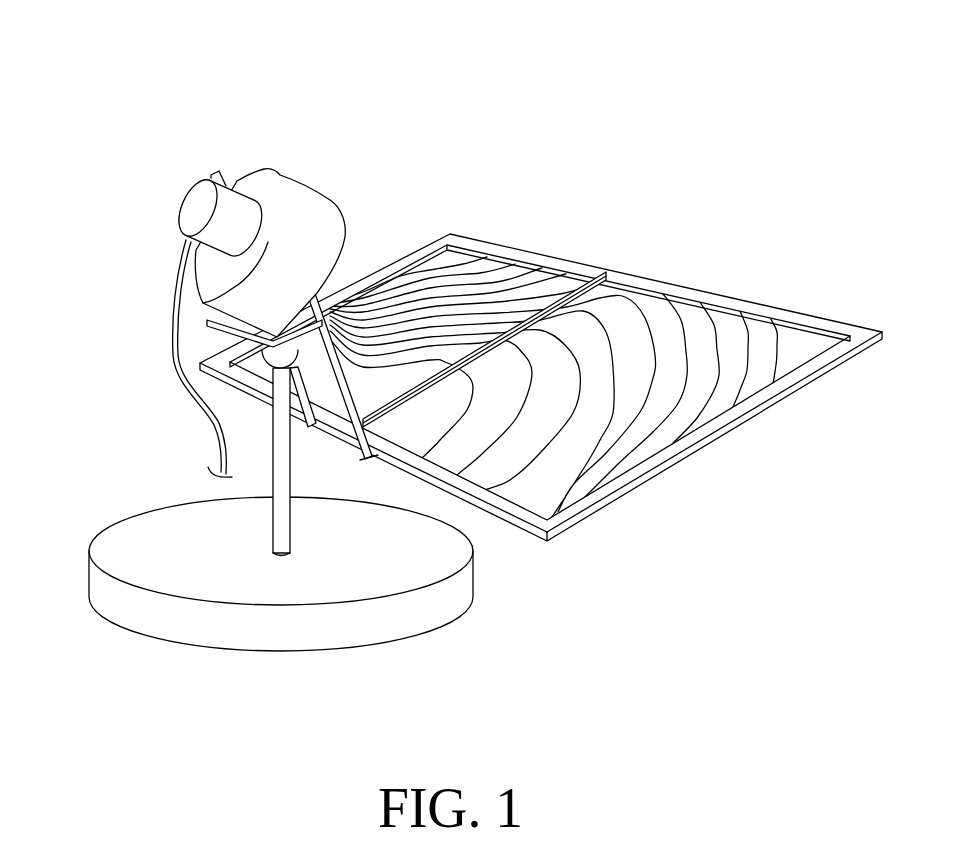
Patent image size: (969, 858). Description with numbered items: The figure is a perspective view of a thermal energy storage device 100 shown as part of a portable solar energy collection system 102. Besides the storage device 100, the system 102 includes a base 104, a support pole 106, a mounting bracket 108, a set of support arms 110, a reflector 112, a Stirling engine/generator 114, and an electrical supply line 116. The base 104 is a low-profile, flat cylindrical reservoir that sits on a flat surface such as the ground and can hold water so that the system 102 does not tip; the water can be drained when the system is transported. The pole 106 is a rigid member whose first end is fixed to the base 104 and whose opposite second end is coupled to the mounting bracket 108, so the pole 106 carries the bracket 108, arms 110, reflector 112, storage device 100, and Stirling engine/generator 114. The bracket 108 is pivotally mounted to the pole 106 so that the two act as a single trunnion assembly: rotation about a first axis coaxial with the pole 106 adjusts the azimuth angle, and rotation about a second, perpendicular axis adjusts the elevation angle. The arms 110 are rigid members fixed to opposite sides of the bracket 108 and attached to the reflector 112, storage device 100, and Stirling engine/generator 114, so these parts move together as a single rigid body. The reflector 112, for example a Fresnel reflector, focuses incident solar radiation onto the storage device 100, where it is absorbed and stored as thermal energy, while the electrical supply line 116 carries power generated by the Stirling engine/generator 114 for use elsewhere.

The thermal energy storage device 100 is at (306, 213).
The portable solar energy collection system 102 is at (474, 341).
The base 104 is at (423, 616).
The support pole 106 is at (283, 524).
The mounting bracket 108 is at (205, 322).
The support arms 110 is at (372, 459).
The reflector 112 is at (637, 276).
The Stirling engine/generator 114 is at (196, 195).
The electrical supply line 116 is at (176, 382).